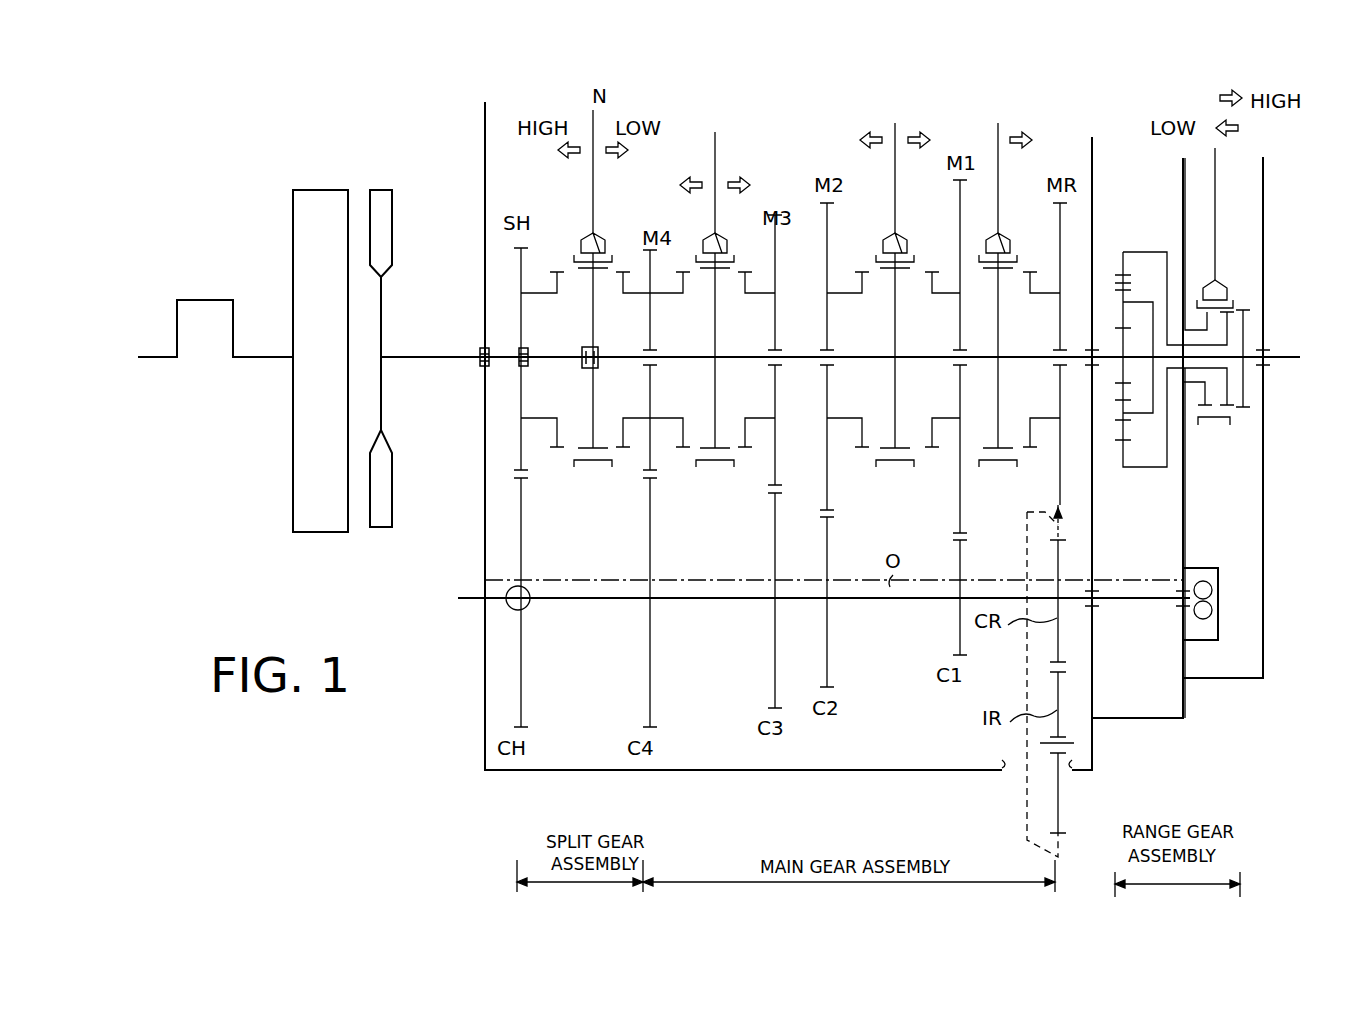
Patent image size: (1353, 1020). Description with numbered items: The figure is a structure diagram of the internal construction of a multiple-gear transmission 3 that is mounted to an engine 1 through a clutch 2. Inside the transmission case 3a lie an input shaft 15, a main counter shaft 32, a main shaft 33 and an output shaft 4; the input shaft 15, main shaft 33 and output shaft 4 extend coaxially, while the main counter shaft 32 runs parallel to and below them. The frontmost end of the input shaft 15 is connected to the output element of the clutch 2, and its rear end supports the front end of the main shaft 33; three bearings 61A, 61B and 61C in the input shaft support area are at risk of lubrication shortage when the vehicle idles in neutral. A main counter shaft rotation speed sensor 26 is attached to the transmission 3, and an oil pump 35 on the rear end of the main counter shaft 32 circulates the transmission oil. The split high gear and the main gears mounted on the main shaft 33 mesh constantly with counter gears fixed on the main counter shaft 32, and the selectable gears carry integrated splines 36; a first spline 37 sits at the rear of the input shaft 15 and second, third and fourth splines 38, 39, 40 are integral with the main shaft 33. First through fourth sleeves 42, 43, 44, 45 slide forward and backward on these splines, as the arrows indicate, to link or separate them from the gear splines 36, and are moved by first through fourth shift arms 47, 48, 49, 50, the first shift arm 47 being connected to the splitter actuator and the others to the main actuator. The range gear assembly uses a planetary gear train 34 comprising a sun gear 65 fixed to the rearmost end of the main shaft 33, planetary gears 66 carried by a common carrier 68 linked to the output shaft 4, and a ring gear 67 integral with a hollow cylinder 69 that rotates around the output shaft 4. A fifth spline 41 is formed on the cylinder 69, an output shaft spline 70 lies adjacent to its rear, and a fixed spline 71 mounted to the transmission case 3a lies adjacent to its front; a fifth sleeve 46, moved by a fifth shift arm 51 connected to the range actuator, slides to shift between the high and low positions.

The engine 1 is at (206, 290).
The clutch 2 is at (339, 176).
The multiple-gear transmission 3 is at (842, 116).
The transmission case 3a is at (485, 177).
The output shaft 4 is at (1286, 357).
The input shaft 15 is at (424, 352).
The main counter shaft rotation speed sensor 26 is at (526, 608).
The main counter shaft 32 is at (562, 604).
The main shaft 33 is at (798, 352).
The planetary gear train 34 is at (1141, 192).
The oil pump 35 is at (1224, 574).
The splines 36 is at (794, 518).
The first spline 37 is at (597, 350).
The second spline 38 is at (719, 350).
The third spline 39 is at (900, 350).
The fourth spline 40 is at (1003, 350).
The fifth spline 41 is at (1246, 320).
The first sleeve 42 is at (596, 240).
The second sleeve 43 is at (718, 235).
The third sleeve 44 is at (901, 242).
The fourth sleeve 45 is at (1005, 240).
The fifth sleeve 46 is at (1223, 287).
The first shift arm 47 is at (582, 240).
The second shift arm 48 is at (706, 240).
The third shift arm 49 is at (891, 242).
The fourth shift arm 50 is at (996, 240).
The fifth shift arm 51 is at (1218, 278).
The bearing 61A is at (480, 366).
The bearing 61B is at (519, 368).
The bearing 61C is at (578, 366).
The sun gear 65 is at (1112, 288).
The planetary gears 66 is at (1130, 288).
The ring gear 67 is at (1129, 254).
The carrier 68 is at (1158, 460).
The hollow cylinder 69 is at (1190, 405).
The output shaft spline 70 is at (1252, 330).
The fixed spline 71 is at (1194, 272).